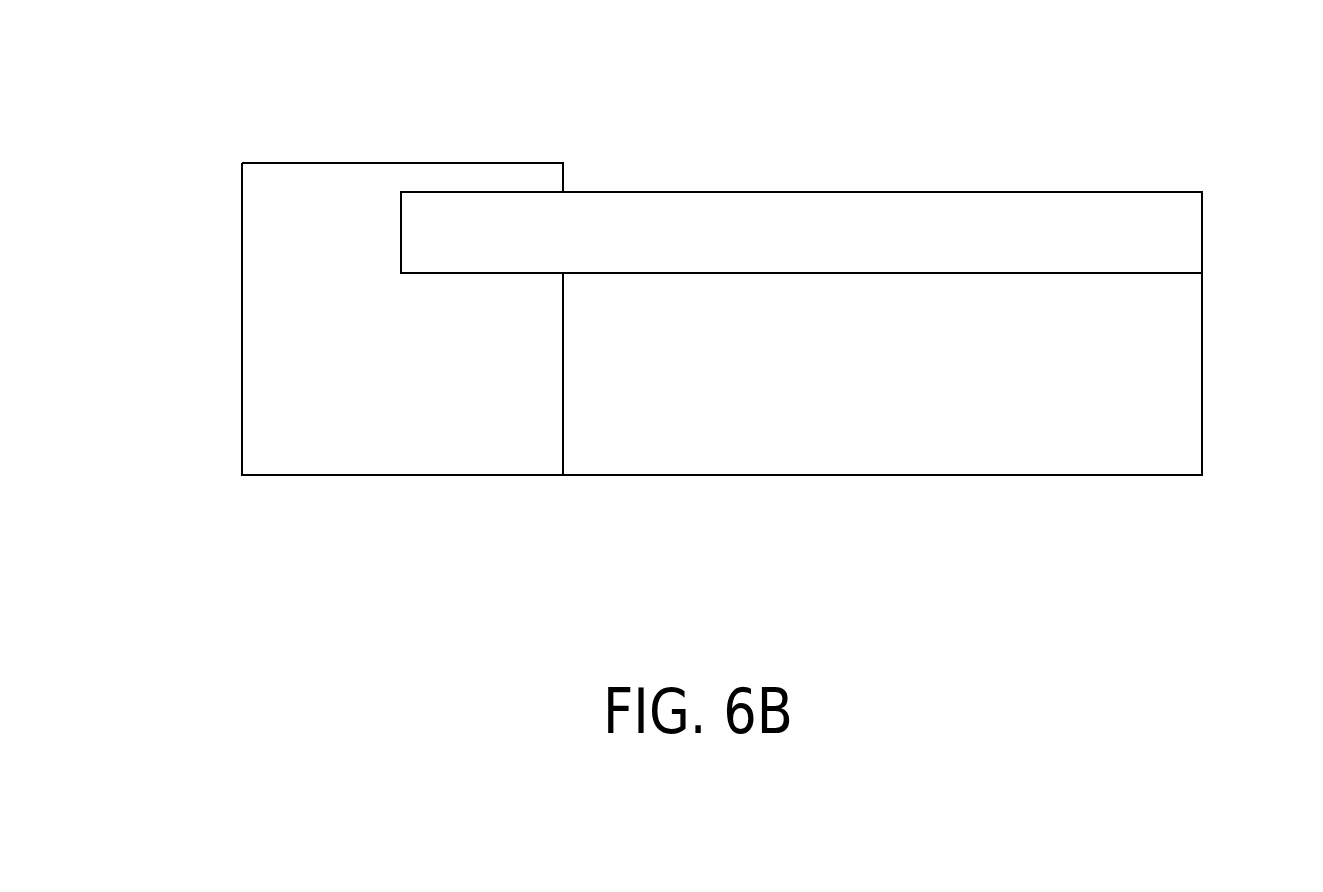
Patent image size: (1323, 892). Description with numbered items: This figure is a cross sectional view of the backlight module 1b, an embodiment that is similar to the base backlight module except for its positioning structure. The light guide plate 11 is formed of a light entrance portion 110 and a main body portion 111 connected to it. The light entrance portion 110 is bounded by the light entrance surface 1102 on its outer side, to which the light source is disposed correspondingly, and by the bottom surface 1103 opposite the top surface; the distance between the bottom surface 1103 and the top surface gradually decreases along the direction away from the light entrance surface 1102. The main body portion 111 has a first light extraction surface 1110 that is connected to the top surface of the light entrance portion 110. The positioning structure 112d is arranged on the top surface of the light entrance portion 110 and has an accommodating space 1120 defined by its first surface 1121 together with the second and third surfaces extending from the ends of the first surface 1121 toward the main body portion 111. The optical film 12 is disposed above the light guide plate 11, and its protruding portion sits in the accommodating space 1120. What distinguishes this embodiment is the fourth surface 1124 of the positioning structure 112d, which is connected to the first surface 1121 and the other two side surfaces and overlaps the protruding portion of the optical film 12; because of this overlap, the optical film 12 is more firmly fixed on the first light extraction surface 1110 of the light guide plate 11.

The backlight module 1b is at (1310, 93).
The light guide plate 11 is at (644, 378).
The light entrance portion 110 is at (422, 459).
The main body portion 111 is at (649, 458).
The light entrance surface 1102 is at (240, 400).
The bottom surface 1103 is at (307, 477).
The first light extraction surface 1110 is at (767, 273).
The positioning structure 112d is at (327, 175).
The optical film 12 is at (982, 202).
The accommodating space 1120 is at (535, 218).
The first surface 1121 is at (412, 224).
The fourth surface 1124 is at (481, 203).